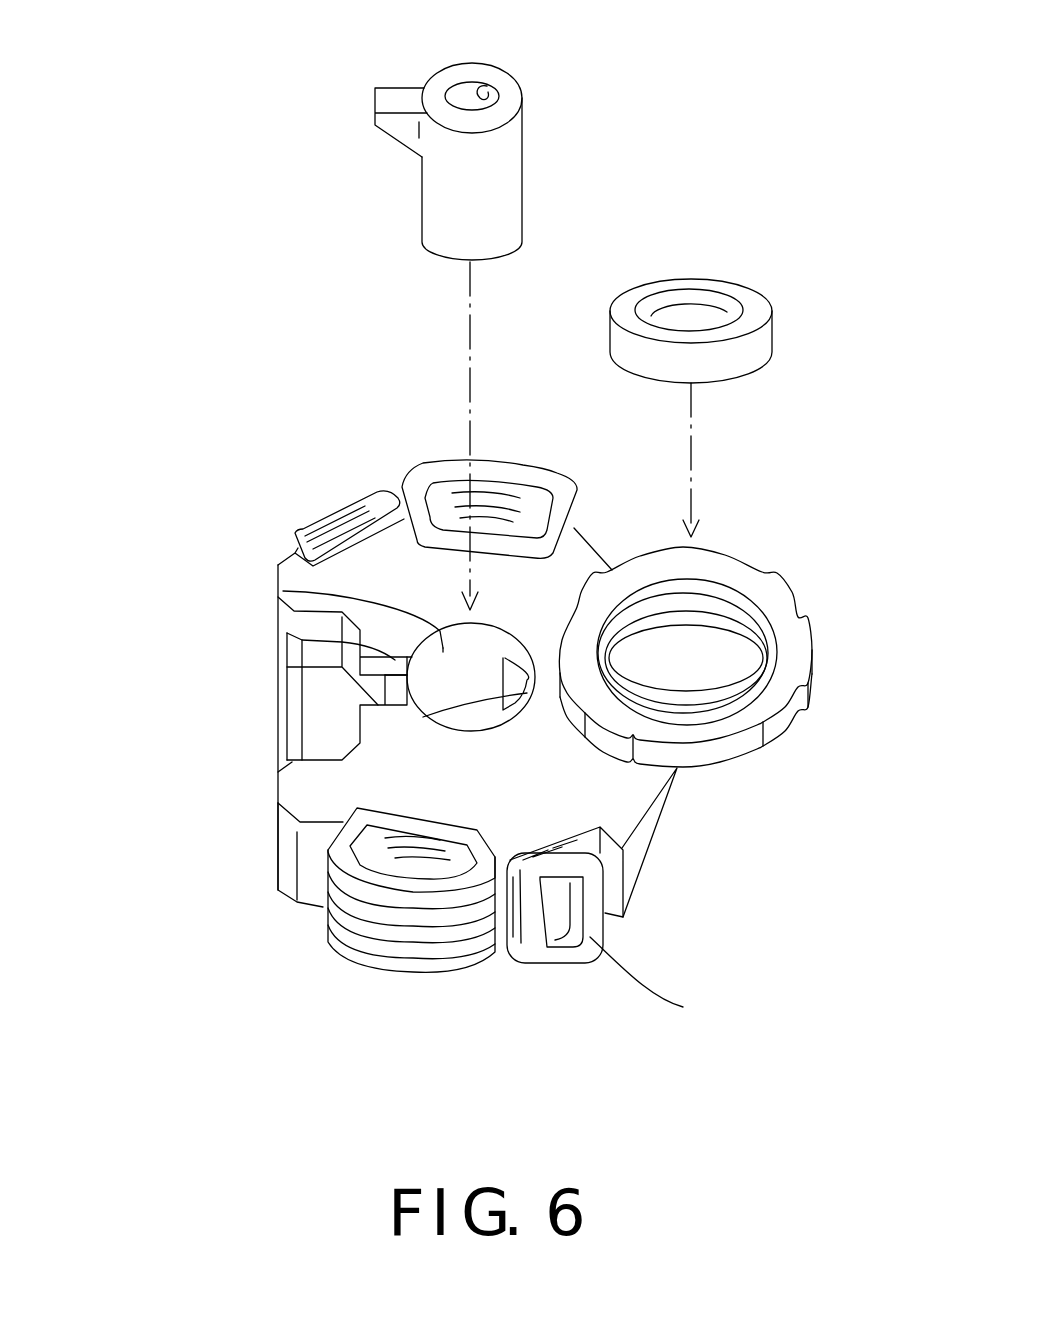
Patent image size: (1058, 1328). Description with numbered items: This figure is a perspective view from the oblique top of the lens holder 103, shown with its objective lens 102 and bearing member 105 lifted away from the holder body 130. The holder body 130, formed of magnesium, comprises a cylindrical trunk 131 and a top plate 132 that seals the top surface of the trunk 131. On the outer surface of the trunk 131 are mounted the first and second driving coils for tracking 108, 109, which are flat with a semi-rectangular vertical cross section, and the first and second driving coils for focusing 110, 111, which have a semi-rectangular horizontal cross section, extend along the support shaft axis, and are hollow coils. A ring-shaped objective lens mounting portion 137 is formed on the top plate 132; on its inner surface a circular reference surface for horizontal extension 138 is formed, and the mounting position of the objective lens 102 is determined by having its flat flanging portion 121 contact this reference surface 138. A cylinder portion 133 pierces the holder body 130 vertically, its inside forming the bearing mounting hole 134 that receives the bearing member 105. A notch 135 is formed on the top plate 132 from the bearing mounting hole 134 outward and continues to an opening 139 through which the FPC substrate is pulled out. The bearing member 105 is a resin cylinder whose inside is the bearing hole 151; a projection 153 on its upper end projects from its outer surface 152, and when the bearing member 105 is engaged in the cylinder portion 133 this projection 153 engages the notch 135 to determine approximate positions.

The objective lens 102 is at (758, 268).
The flat flanging portion 121 is at (755, 305).
The lens holder 103 is at (148, 236).
The bearing member 105 is at (402, 195).
The bearing hole 151 is at (460, 84).
The outer surface 152 is at (498, 175).
The projection 153 is at (382, 88).
The holder body 130 is at (281, 565).
The first driving coil for tracking 108 is at (348, 500).
The first driving coil for focusing 110 is at (497, 467).
The reference surface for horizontal extension 138 is at (685, 602).
The objective lens mounting portion 137 is at (723, 732).
The bearing mounting hole 134 is at (283, 591).
The notch 135 is at (303, 640).
The cylinder portion 133 is at (437, 680).
The opening 139 is at (320, 737).
The trunk 131 is at (283, 850).
The top plate 132 is at (548, 797).
The second driving coil for focusing 111 is at (347, 863).
The second driving coil for tracking 109 is at (590, 937).